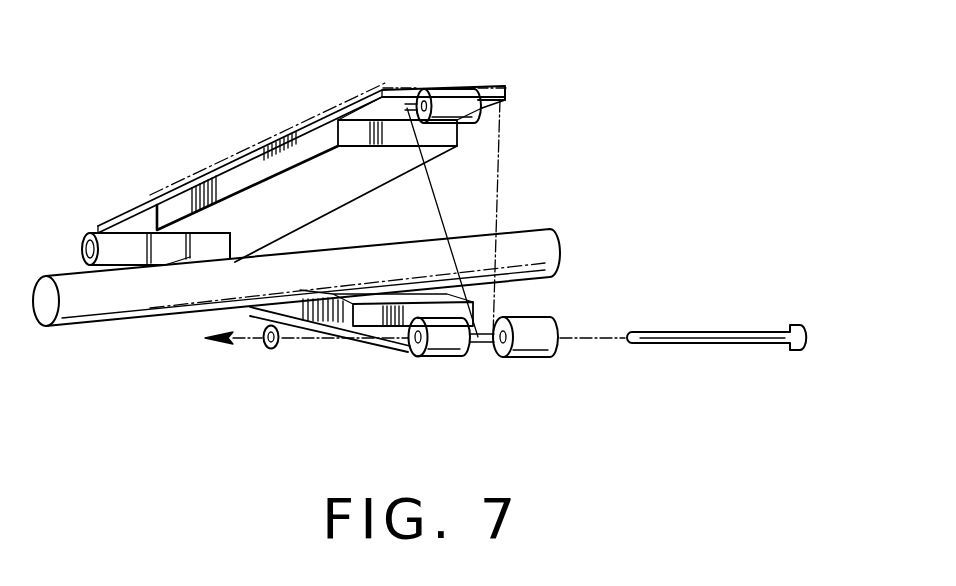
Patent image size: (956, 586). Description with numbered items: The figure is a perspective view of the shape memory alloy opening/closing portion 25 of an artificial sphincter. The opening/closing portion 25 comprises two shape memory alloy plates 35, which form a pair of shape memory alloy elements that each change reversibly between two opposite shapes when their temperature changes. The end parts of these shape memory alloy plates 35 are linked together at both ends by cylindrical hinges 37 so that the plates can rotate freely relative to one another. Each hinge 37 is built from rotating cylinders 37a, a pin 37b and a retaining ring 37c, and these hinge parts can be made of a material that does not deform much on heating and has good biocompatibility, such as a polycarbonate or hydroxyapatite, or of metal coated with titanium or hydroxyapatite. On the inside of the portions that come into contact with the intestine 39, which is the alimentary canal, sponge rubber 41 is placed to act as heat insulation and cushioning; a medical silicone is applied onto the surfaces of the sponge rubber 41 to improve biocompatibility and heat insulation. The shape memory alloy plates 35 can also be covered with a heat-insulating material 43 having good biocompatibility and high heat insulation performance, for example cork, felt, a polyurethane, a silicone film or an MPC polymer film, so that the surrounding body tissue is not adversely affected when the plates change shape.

The shape memory alloy opening/closing portion 25 is at (324, 83).
The shape memory alloy plate 35 is at (163, 187).
The cylindrical hinge 37 is at (122, 238).
The rotating cylinder 37a is at (452, 100).
The pin 37b is at (695, 341).
The retaining ring 37c is at (272, 350).
The intestine 39 is at (172, 290).
The sponge rubber 41 is at (257, 170).
The heat-insulating material 43 is at (500, 82).